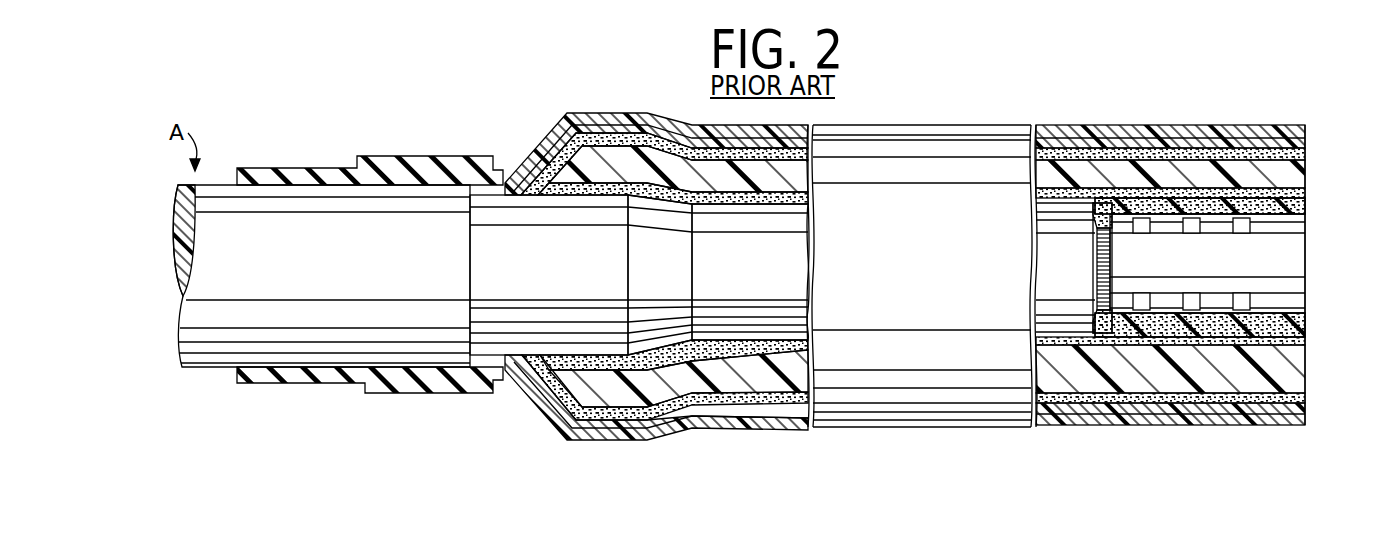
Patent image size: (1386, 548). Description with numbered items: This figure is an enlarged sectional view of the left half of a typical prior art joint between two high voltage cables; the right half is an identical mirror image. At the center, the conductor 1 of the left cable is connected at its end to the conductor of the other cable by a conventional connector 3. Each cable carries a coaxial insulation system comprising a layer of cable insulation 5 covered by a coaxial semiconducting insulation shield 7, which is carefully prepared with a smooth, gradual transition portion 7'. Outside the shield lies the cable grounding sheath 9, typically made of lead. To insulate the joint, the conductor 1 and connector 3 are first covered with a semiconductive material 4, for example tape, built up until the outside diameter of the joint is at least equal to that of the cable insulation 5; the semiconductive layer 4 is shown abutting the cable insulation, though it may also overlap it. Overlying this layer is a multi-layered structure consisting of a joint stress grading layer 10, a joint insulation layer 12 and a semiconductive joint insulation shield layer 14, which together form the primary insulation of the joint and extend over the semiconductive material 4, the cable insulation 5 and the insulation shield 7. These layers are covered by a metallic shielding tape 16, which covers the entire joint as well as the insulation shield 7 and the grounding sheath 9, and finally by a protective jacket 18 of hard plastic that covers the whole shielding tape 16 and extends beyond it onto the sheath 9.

The conductor 1 is at (1100, 259).
The connector 3 is at (1292, 250).
The semiconductive material 4 is at (1305, 210).
The cable insulation 5 is at (776, 272).
The semiconducting insulation shield 7 is at (549, 275).
The transition portion 7' is at (660, 275).
The cable grounding sheath 9 is at (340, 270).
The joint stress grading layer 10 is at (1300, 195).
The joint insulation layer 12 is at (1287, 178).
The semiconductive joint insulation shield layer 14 is at (1270, 130).
The metallic shielding tape 16 is at (1205, 144).
The protective jacket 18 is at (1157, 128).